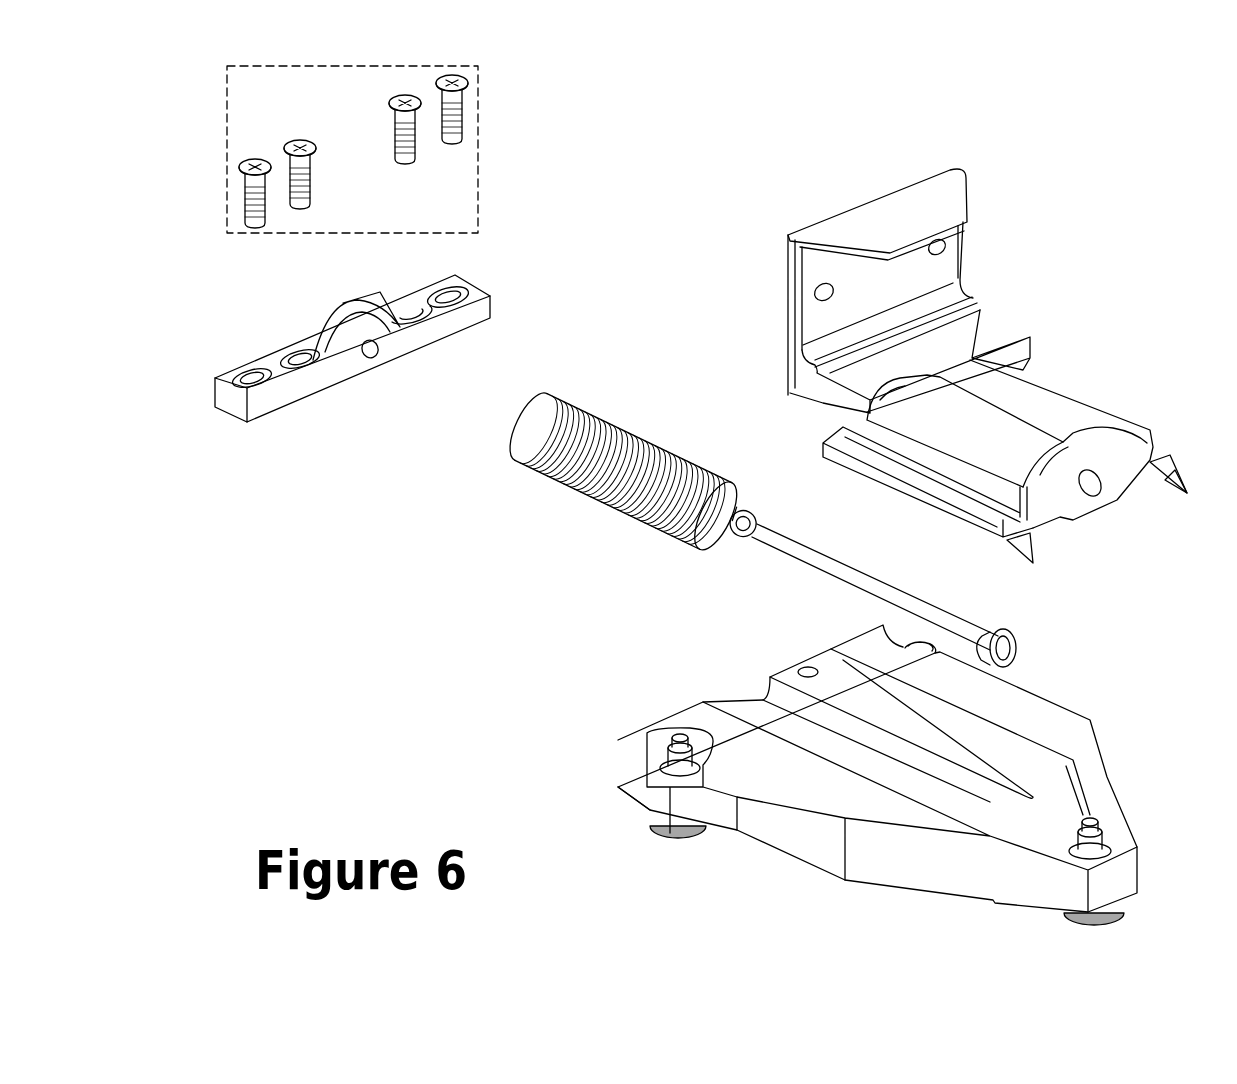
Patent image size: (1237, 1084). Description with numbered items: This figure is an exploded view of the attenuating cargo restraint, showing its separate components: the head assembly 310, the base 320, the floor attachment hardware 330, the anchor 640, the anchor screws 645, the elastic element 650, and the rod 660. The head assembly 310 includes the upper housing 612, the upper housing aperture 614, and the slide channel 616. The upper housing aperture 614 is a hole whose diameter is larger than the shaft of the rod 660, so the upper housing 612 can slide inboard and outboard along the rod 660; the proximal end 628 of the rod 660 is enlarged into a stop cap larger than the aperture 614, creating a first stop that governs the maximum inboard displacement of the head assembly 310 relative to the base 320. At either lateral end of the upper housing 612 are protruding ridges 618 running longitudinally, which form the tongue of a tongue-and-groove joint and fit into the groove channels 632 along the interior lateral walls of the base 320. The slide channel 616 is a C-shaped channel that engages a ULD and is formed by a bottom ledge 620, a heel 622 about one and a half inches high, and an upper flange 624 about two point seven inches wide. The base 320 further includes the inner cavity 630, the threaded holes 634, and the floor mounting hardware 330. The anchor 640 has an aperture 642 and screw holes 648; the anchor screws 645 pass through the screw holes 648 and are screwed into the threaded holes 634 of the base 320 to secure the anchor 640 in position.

The head assembly 310 is at (758, 208).
The base 320 is at (1140, 746).
The floor attachment hardware 330 is at (1086, 913).
The upper housing 612 is at (1029, 468).
The upper housing aperture 614 is at (1096, 488).
The slide channel 616 is at (813, 380).
The protruding ridges 618 is at (1121, 523).
The bottom ledge 620 is at (898, 272).
The heel 622 is at (963, 247).
The upper flange 624 is at (913, 205).
The proximal end 628 is at (1010, 652).
The inner cavity 630 is at (877, 742).
The groove channels 632 is at (770, 677).
The threaded holes 634 is at (803, 665).
The anchor 640 is at (388, 319).
The aperture 642 is at (376, 355).
The anchor screws 645 is at (480, 163).
The screw holes 648 is at (446, 293).
The elastic element 650 is at (533, 470).
The rod 660 is at (806, 556).